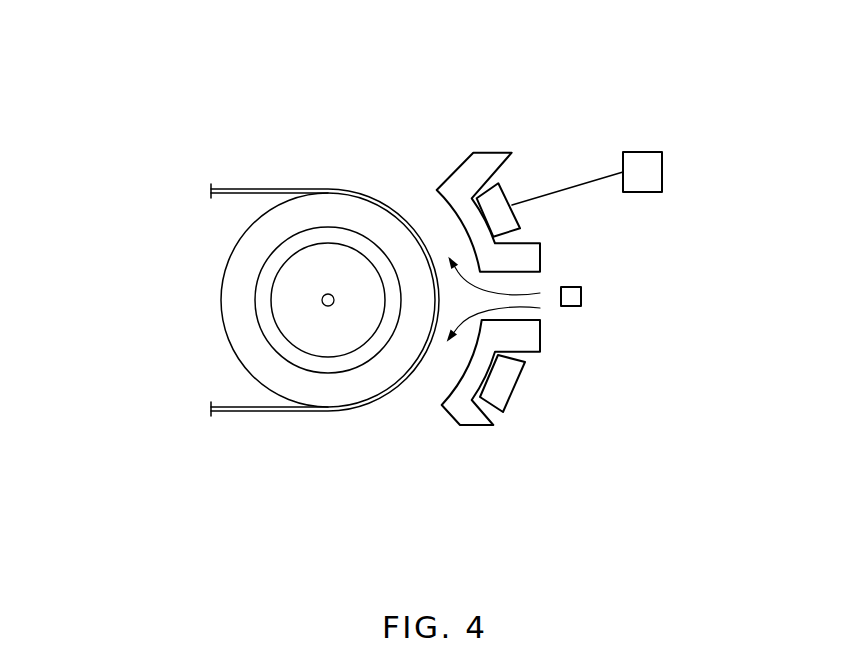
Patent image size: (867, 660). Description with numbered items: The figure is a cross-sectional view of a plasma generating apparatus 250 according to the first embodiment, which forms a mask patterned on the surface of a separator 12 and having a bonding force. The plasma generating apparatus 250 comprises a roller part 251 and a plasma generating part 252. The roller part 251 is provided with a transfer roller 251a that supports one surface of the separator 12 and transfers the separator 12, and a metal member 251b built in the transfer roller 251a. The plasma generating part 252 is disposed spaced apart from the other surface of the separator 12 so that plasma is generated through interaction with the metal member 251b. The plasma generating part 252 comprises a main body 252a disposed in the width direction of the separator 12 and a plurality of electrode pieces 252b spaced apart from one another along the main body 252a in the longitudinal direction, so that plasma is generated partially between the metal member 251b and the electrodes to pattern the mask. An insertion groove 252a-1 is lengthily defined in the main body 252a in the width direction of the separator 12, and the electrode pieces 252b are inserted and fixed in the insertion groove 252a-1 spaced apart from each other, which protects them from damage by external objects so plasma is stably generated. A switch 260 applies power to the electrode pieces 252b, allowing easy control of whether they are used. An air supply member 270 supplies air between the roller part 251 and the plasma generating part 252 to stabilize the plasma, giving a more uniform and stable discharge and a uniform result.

The separator 12 is at (247, 188).
The plasma generating apparatus 250 is at (661, 93).
The roller part 251 is at (238, 300).
The transfer roller 251a is at (252, 255).
The metal member 251b is at (322, 300).
The plasma generating part 252 is at (608, 245).
The main body 252a is at (528, 257).
The insertion groove 252a-1 is at (508, 167).
The electrode pieces 252b is at (512, 217).
The switch 260 is at (662, 172).
The air supply member 270 is at (570, 306).